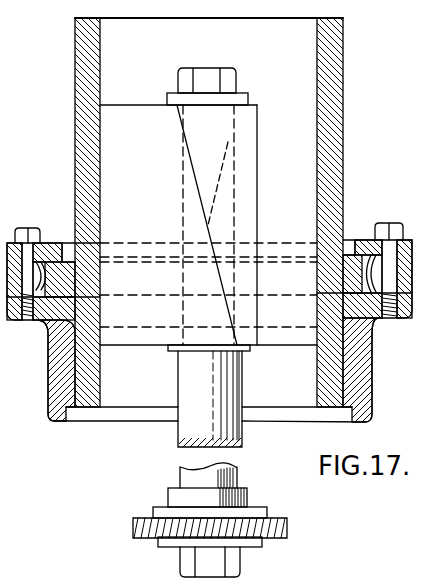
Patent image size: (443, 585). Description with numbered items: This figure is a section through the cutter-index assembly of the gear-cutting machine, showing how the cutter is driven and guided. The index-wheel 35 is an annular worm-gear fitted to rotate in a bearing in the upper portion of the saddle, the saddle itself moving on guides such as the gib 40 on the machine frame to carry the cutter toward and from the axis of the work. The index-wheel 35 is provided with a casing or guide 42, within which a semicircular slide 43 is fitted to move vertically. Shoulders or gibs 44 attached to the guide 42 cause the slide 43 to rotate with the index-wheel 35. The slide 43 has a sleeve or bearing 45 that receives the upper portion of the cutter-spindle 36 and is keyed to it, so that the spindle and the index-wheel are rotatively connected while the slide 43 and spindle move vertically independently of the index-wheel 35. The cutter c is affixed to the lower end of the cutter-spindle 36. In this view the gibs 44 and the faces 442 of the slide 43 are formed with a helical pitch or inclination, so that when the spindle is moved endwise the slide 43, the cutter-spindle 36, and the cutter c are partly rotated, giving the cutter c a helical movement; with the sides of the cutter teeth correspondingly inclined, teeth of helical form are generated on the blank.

The index-wheel 35 is at (364, 240).
The cutter-spindle 36 is at (180, 380).
The gib 40 is at (30, 218).
The casing or guide 42 is at (75, 172).
The semicircular slide 43 is at (108, 144).
The shoulders or gibs 44 is at (238, 93).
The sleeve or bearing 45 is at (253, 168).
The faces of the slide 442 is at (187, 148).
The cutter C is at (133, 525).